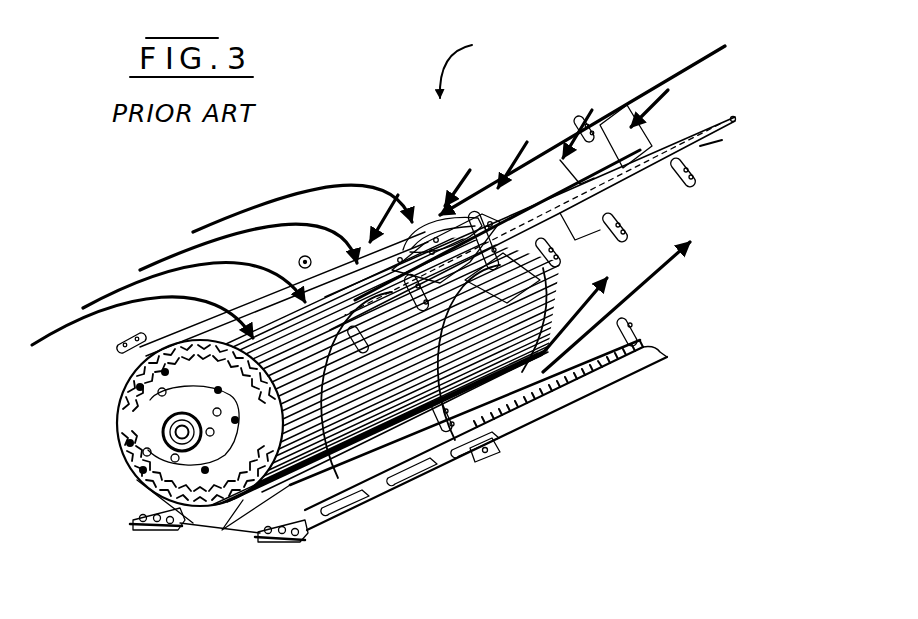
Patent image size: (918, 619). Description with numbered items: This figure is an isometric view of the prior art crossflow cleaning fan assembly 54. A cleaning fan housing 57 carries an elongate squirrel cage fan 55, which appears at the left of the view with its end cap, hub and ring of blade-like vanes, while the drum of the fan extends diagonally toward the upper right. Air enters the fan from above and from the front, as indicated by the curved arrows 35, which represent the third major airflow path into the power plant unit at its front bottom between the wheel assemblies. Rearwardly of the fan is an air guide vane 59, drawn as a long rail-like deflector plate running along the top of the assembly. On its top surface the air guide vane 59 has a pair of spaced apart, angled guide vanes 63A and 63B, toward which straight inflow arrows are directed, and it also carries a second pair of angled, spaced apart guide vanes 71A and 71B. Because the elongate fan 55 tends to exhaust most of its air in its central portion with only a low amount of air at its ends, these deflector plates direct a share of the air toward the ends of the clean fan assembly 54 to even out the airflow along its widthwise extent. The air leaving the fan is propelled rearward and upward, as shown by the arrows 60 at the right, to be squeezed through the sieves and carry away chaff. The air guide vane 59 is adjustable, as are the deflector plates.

The arrows 35 is at (176, 250).
The cleaning fan assembly 54 is at (471, 68).
The squirrel cage fan 55 is at (128, 410).
The cleaning fan housing 57 is at (217, 517).
The air guide vane 59 is at (697, 146).
The arrows 60 is at (583, 282).
The angled guide vane 63A is at (628, 124).
The angled guide vane 63B is at (540, 158).
The angled guide vane 71A is at (625, 196).
The angled guide vane 71B is at (543, 248).